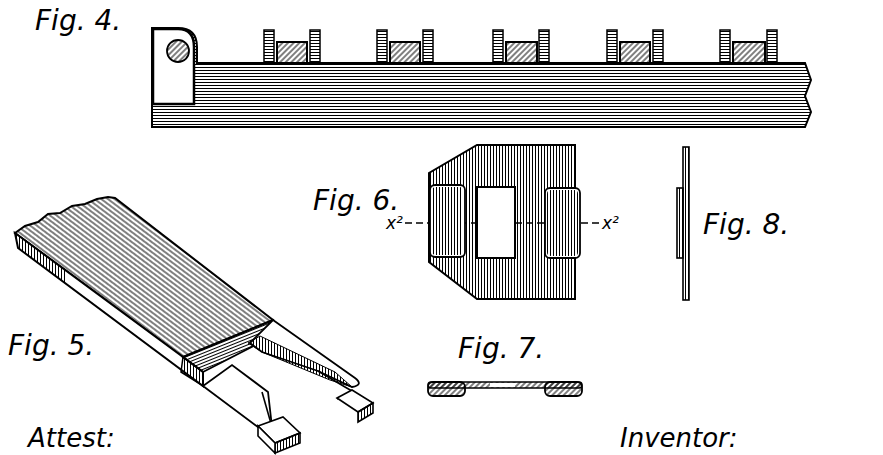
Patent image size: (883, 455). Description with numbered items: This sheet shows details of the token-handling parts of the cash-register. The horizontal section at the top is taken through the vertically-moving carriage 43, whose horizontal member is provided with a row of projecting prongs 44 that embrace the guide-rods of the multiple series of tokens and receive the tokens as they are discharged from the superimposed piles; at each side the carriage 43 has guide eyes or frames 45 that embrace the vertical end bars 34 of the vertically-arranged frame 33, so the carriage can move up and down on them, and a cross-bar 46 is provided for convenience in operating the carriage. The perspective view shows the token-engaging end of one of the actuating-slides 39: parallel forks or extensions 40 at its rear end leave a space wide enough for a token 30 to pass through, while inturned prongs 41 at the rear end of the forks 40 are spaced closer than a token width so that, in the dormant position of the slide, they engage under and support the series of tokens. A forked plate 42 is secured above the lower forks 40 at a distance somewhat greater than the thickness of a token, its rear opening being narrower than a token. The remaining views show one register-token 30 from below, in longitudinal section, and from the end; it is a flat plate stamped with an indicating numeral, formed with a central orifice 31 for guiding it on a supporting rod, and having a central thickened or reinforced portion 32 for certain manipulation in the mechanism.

In FIG. 6, the register-token 30 is at (502, 231).
In FIG. 8, the register-token 30 is at (672, 223).
In FIG. 7, the register-token 30 is at (505, 375).
In FIG. 6, the central orifice 31 is at (496, 222).
In FIG. 7, the central orifice 31 is at (490, 384).
In FIG. 6, the central thickened portion 32 is at (431, 246).
In FIG. 8, the central thickened portion 32 is at (677, 240).
In FIG. 7, the central thickened portion 32 is at (505, 400).
In FIG. 4, the vertically-arranged frame 33 is at (402, 42).
In FIG. 4, the vertical end bar 34 is at (167, 53).
In FIG. 5, the actuating-slide 39 is at (144, 291).
In FIG. 5, the fork 40 is at (328, 389).
In FIG. 5, the inturned prong 41 is at (345, 411).
In FIG. 5, the forked plate 42 is at (310, 353).
In FIG. 4, the vertically-moving carriage 43 is at (403, 96).
In FIG. 4, the projecting prong 44 is at (313, 31).
In FIG. 4, the guide eye 45 is at (160, 89).
In FIG. 4, the cross-bar 46 is at (630, 112).